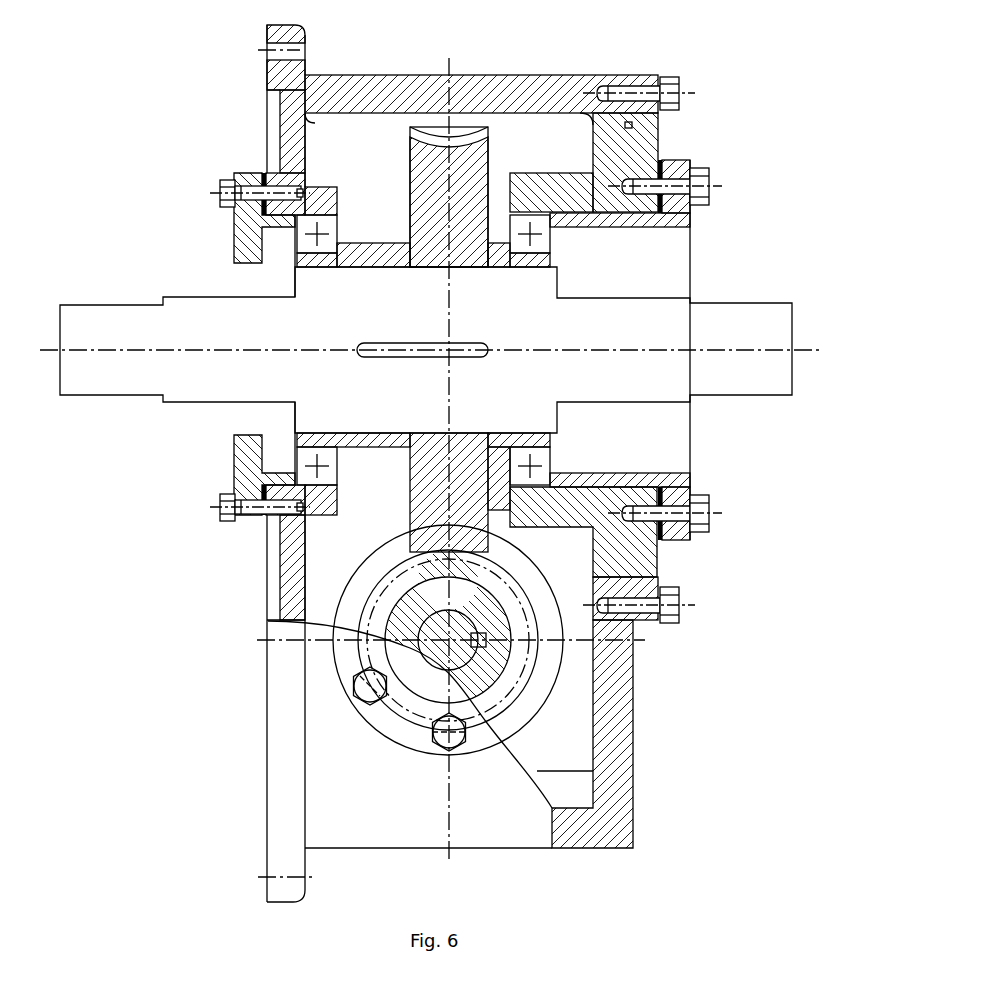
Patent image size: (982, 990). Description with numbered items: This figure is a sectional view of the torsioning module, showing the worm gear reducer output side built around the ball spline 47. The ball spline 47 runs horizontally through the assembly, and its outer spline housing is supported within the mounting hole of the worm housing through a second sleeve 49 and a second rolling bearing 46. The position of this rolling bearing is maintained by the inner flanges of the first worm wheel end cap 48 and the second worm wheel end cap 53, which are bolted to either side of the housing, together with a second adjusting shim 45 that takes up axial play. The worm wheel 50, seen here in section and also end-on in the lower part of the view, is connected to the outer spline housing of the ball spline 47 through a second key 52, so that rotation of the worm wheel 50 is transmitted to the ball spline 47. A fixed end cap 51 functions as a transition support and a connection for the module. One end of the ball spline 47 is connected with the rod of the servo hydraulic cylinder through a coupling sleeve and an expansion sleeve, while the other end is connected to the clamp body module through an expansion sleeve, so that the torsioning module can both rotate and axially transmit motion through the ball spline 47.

The second adjusting shim 45 is at (258, 523).
The second rolling bearing 46 is at (307, 462).
The ball spline 47 is at (180, 320).
The first worm wheel end cap 48 is at (240, 255).
The second sleeve 49 is at (325, 255).
The worm wheel 50 is at (447, 205).
The fixed end cap 51 is at (625, 145).
The second key 52 is at (487, 352).
The second worm wheel end cap 53 is at (677, 480).